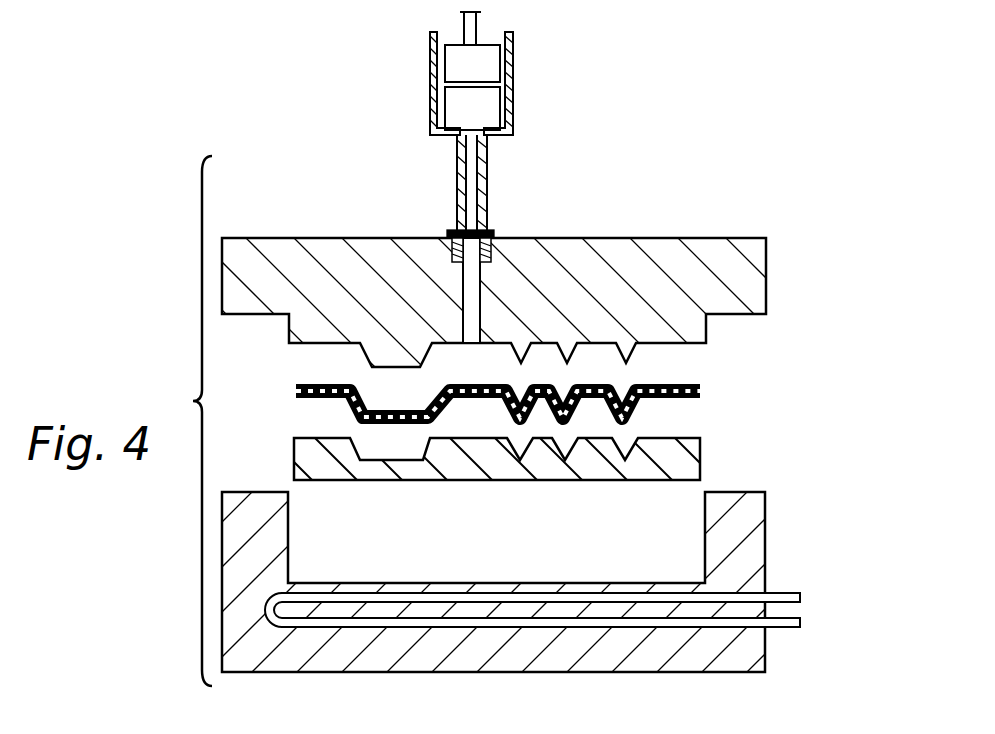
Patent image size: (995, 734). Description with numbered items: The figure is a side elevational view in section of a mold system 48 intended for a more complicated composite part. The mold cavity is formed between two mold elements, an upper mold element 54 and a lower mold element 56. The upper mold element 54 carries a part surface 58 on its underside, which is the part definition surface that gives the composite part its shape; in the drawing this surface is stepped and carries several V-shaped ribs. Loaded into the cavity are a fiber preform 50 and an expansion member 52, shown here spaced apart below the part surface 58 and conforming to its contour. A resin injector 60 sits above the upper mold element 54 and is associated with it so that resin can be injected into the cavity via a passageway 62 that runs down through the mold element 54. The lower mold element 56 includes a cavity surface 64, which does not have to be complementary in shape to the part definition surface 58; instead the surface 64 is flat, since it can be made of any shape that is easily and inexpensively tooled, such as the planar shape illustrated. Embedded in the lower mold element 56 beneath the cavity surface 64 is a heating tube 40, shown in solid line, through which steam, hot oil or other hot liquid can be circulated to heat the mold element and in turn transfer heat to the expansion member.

The heating tube 40 is at (789, 595).
The mold system 48 is at (800, 325).
The fiber preform 50 is at (700, 389).
The expansion member 52 is at (700, 452).
The mold element 54 is at (812, 208).
The mold element 56 is at (750, 518).
The part surface 58 is at (657, 345).
The resin injector 60 is at (508, 105).
The passageway 62 is at (502, 268).
The cavity surface 64 is at (600, 592).